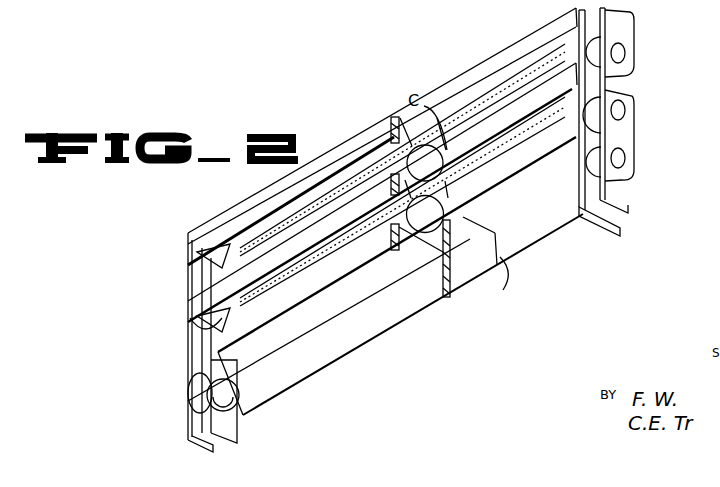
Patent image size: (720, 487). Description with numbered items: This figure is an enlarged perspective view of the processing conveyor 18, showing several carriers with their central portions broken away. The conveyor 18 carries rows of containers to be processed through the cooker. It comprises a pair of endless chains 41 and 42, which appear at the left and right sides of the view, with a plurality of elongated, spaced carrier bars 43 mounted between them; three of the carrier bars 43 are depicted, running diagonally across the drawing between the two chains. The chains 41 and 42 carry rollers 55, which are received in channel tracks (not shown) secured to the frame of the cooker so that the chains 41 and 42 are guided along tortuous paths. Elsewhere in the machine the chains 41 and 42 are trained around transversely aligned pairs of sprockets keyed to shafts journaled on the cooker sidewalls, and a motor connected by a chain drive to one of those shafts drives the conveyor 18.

The processing conveyor 18 is at (640, 33).
The endless chain 41 is at (188, 422).
The endless chain 42 is at (628, 120).
The carrier bar 43 is at (432, 297).
The roller 55 is at (583, 77).